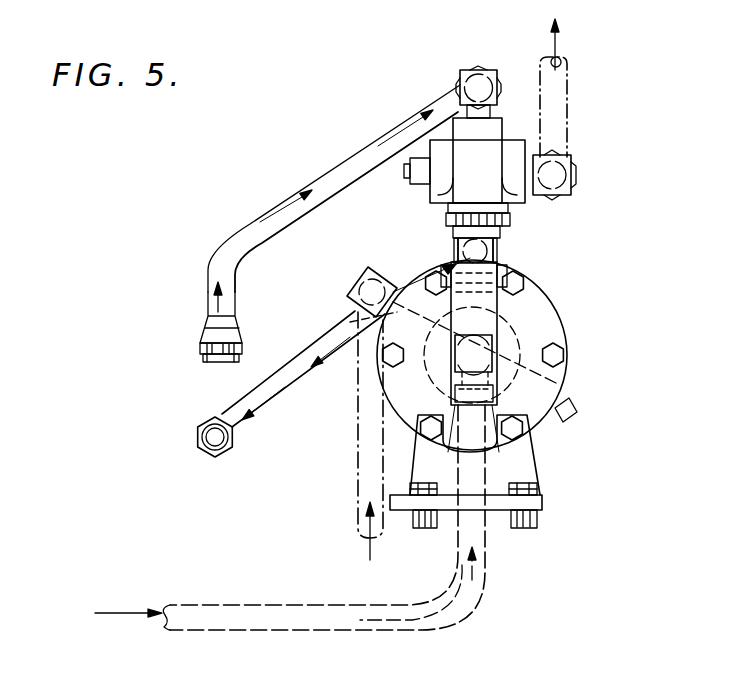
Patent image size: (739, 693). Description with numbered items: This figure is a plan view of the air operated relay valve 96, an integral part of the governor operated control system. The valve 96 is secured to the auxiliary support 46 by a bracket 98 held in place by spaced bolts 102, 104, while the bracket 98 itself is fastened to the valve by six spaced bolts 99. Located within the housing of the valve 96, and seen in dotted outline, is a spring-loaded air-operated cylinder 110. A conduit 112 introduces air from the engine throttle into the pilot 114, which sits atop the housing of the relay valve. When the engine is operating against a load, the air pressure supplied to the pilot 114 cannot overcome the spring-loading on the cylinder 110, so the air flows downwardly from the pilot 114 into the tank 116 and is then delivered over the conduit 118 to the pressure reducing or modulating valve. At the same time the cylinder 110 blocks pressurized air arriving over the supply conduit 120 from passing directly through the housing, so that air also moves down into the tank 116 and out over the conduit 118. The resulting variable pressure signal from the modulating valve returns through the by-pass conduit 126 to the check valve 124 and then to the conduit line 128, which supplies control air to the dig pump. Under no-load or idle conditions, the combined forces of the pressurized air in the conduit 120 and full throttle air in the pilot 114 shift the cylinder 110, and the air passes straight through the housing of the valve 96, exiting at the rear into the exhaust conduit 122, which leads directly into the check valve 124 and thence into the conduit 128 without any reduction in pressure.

The auxiliary support 46 is at (544, 501).
The air operated relay valve 96 is at (553, 338).
The bracket 98 is at (520, 479).
The bolts 99 is at (395, 362).
The bolt 102 is at (420, 530).
The bolt 104 is at (538, 523).
The air-operated cylinder 110 is at (556, 381).
The conduit 112 is at (491, 571).
The pilot 114 is at (480, 356).
The tank 116 is at (482, 320).
The conduit 118 is at (300, 358).
The supply conduit 120 is at (370, 433).
The exhaust conduit 122 is at (498, 252).
The check valve 124 is at (512, 187).
The by-pass conduit 126 is at (334, 165).
The conduit line 128 is at (562, 140).